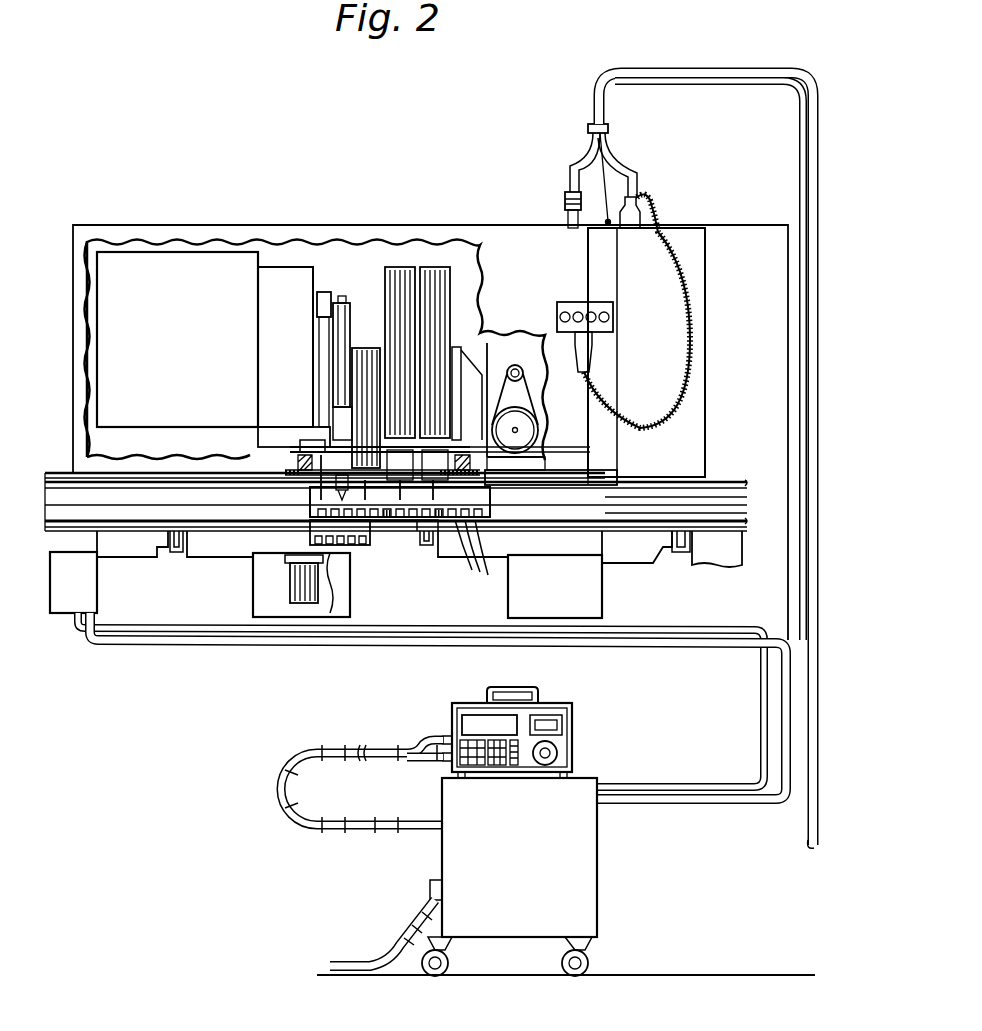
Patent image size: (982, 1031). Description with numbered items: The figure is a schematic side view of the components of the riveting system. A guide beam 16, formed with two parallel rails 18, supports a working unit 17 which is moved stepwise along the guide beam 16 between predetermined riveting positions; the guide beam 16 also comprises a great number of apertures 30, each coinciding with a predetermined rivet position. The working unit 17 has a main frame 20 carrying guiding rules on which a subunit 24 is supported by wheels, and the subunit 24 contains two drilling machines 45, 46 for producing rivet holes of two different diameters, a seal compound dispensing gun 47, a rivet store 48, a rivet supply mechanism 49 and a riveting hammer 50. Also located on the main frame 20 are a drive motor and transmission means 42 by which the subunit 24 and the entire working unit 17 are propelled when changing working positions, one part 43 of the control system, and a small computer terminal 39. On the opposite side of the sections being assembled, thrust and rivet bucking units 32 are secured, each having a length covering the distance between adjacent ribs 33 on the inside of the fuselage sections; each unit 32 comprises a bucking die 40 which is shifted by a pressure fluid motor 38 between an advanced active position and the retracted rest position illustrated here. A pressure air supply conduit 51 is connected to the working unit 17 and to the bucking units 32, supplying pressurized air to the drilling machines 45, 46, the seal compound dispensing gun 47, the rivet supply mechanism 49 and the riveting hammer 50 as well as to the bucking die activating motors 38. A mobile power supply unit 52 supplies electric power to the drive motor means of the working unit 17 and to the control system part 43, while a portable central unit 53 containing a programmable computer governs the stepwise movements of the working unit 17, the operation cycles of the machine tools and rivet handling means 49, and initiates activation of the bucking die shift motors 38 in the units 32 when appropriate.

The guide beam 16 is at (733, 507).
The working unit 17 is at (508, 222).
The rails 18 is at (720, 482).
The main frame 20 is at (587, 484).
The subunit 24 is at (474, 390).
The apertures 30 is at (478, 540).
The thrust and rivet bucking units 32 is at (88, 586).
The ribs 33 is at (175, 552).
The pressure fluid motor 38 is at (297, 590).
The small computer terminal 39 is at (573, 302).
The bucking die 40 is at (360, 547).
The drive motor and transmission means 42 is at (522, 425).
The control system part 43 is at (693, 275).
The drilling machine 45 is at (400, 270).
The drilling machine 46 is at (434, 270).
The seal compound dispensing gun 47 is at (340, 300).
The rivet store 48 is at (140, 272).
The rivet supply mechanism 49 is at (292, 278).
The riveting hammer 50 is at (365, 352).
The pressure air supply conduit 51 is at (808, 842).
The mobile power supply unit 52 is at (572, 785).
The portable central unit 53 is at (475, 722).